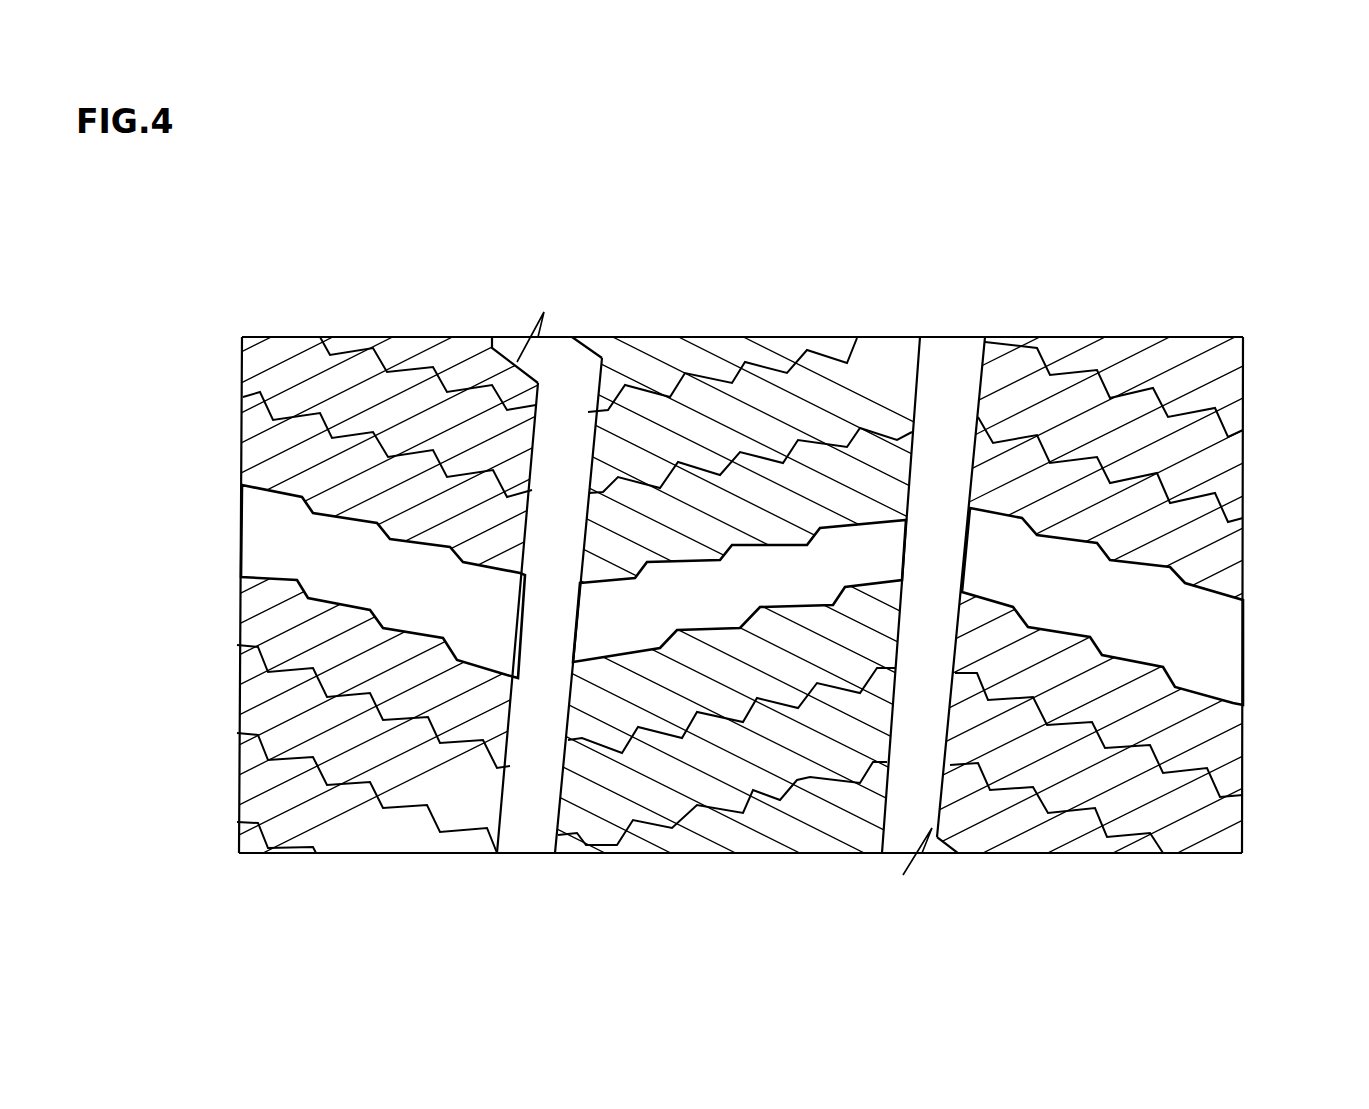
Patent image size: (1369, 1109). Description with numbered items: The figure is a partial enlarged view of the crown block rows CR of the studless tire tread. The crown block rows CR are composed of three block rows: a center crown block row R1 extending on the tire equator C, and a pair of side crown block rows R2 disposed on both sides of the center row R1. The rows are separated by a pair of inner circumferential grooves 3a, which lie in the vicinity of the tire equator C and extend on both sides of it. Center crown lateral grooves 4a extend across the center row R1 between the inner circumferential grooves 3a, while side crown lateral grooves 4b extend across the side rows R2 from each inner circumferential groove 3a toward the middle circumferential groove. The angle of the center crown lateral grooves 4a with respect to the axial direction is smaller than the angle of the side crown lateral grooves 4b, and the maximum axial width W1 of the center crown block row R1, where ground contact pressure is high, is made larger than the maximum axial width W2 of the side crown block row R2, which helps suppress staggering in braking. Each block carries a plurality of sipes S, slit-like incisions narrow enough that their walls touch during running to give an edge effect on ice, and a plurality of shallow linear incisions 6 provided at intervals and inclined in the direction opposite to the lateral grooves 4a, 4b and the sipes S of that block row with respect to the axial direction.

The crown block rows CR is at (365, 197).
The center crown block row R1 is at (778, 305).
The side crown block rows R2 is at (1119, 305).
The sipes S is at (1248, 500).
The inner circumferential grooves 3a is at (960, 350).
The center crown lateral grooves 4a is at (865, 538).
The side crown lateral grooves 4b is at (1222, 611).
The incisions 6 is at (1215, 760).
The tire equator C is at (740, 885).
The maximum width of the center crown block row W1 is at (572, 337).
The maximum width of the side crown block row W2 is at (540, 475).